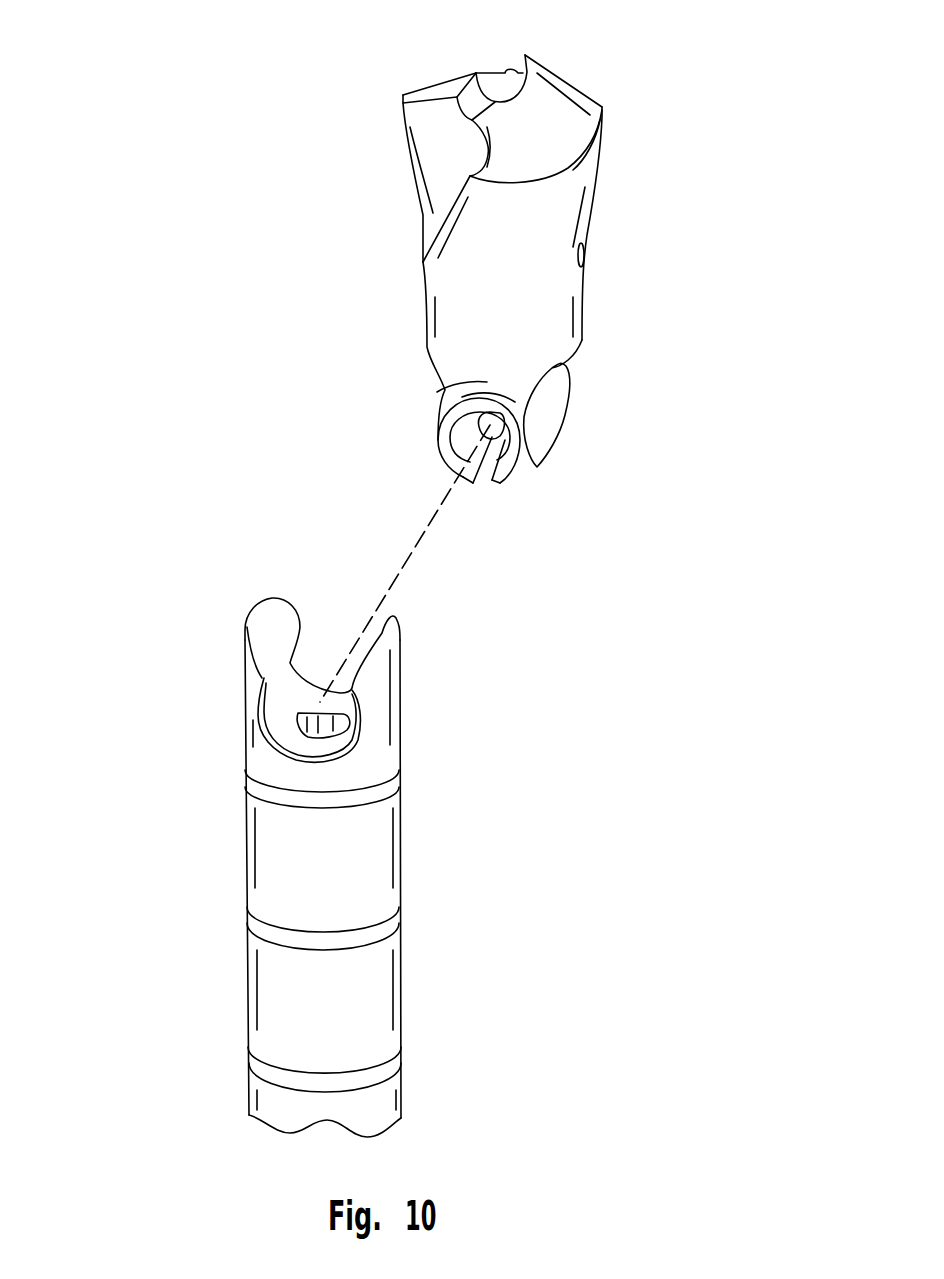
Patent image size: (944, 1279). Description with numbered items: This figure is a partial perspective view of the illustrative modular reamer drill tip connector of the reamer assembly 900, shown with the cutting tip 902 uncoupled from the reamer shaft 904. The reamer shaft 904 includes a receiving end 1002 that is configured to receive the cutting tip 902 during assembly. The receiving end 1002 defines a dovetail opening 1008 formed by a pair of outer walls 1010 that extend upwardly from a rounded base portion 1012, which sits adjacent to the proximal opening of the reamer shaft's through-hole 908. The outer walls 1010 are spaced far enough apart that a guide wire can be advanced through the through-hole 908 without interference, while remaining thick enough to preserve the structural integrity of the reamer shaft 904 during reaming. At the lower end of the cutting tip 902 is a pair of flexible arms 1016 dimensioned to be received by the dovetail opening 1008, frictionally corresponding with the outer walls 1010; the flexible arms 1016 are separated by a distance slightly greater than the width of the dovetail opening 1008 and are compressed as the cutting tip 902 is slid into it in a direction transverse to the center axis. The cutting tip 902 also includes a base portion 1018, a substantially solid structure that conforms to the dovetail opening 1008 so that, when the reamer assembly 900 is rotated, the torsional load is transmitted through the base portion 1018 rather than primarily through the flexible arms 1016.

The reamer assembly 900 is at (366, 105).
The cutting tip 902 is at (557, 108).
The base portion 1018 is at (487, 383).
The flexible arms 1016 is at (442, 447).
The receiving end 1002 is at (337, 600).
The outer walls 1010 is at (250, 662).
The dovetail opening 1008 is at (277, 712).
The rounded base portion 1012 is at (320, 745).
The through-hole 908 is at (333, 723).
The reamer shaft 904 is at (383, 982).